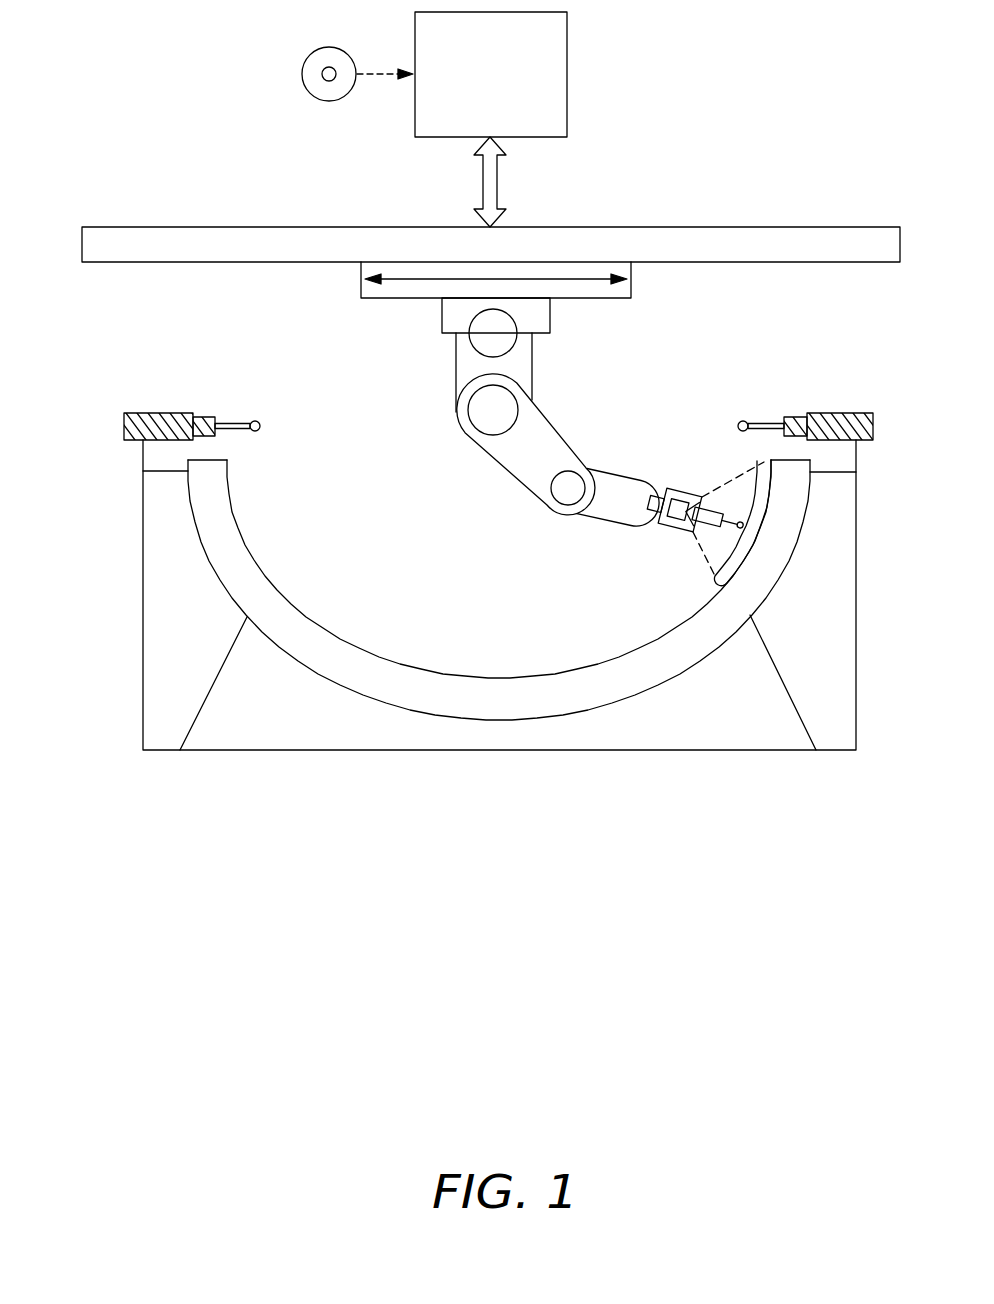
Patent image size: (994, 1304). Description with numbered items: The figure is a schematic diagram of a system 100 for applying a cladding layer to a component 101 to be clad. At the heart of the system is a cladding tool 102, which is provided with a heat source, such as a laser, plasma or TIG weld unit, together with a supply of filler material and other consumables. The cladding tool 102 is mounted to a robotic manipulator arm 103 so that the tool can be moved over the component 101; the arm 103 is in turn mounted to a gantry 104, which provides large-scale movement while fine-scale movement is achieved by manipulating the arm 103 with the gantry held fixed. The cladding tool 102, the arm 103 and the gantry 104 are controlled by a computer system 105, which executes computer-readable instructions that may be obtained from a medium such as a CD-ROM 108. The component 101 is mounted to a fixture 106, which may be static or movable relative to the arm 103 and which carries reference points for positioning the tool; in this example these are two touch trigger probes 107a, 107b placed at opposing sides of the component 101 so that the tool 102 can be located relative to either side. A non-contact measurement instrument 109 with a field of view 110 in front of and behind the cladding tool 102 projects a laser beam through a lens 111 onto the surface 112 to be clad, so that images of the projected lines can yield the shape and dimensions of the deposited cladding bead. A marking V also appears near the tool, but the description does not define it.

The system 100 is at (171, 117).
The component 101 is at (750, 613).
The cladding tool 102 is at (714, 506).
The robotic manipulator arm 103 is at (458, 379).
The gantry 104 is at (578, 262).
The computer system 105 is at (507, 89).
The fixture 106 is at (143, 592).
The touch trigger probe 107a is at (840, 413).
The touch trigger probe 107b is at (157, 413).
The CD-ROM 108 is at (313, 52).
The non-contact measurement instrument 109 is at (676, 530).
The field of view 110 is at (632, 645).
The lens 111 is at (686, 494).
The surface 112 is at (758, 532).
The inspection point V is at (741, 511).